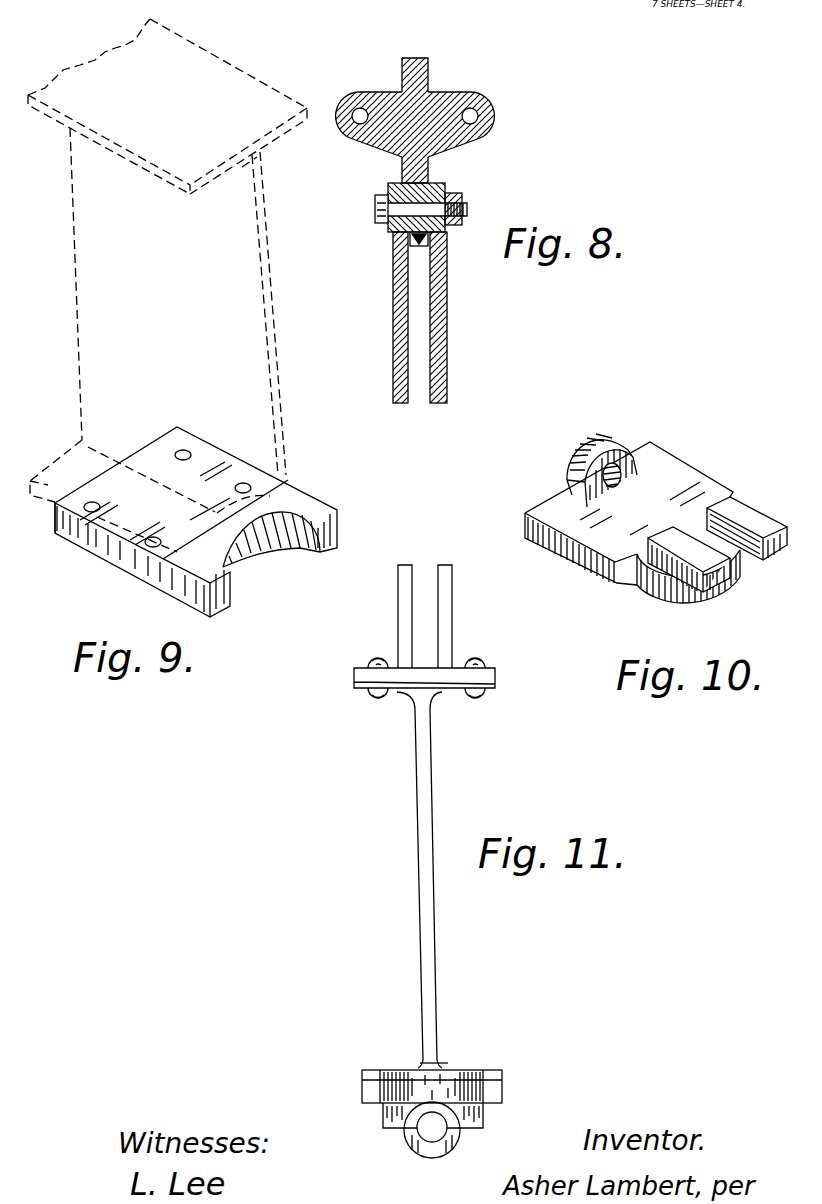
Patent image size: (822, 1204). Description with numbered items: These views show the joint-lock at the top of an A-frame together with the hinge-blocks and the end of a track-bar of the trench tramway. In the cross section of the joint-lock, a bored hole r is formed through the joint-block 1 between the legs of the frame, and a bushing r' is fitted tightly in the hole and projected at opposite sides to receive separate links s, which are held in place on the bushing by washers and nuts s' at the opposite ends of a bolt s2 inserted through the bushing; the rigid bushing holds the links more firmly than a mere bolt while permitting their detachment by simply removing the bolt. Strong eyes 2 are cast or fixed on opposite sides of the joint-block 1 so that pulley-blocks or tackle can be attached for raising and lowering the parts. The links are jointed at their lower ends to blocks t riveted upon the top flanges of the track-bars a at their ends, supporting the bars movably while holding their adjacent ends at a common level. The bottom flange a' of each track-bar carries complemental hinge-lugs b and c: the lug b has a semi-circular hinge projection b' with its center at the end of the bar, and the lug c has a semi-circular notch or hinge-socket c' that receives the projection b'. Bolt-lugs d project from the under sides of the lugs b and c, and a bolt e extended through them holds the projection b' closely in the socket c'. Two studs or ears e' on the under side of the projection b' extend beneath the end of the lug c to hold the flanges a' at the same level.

In FIG. 8, the joint-block 1 is at (430, 72).
In FIG. 8, the eyes 2 is at (494, 112).
In FIG. 8, the bored hole r is at (418, 265).
In FIG. 8, the bushing r' is at (391, 226).
In FIG. 8, the links s is at (417, 317).
In FIG. 8, the washers and nuts s' is at (465, 237).
In FIG. 8, the bolt s2 is at (467, 215).
In FIG. 9, the track-bars a is at (167, 285).
In FIG. 11, the track-bars a is at (424, 863).
In FIG. 9, the bottom flange a' is at (48, 467).
In FIG. 11, the bottom flange a' is at (473, 1043).
In FIG. 9, the hinge-lug c is at (196, 522).
In FIG. 9, the hinge-socket c' is at (271, 555).
In FIG. 10, the hinge-lug b is at (629, 522).
In FIG. 11, the hinge-lug b is at (407, 1089).
In FIG. 10, the hinge projection b' is at (712, 577).
In FIG. 11, the hinge projection b' is at (424, 1057).
In FIG. 10, the bolt-lugs d is at (572, 453).
In FIG. 11, the bolt-lugs d is at (408, 1147).
In FIG. 10, the bolt e is at (756, 517).
In FIG. 10, the studs or ears e' is at (689, 587).
In FIG. 11, the studs or ears e' is at (433, 1118).
In FIG. 11, the blocks t is at (452, 638).